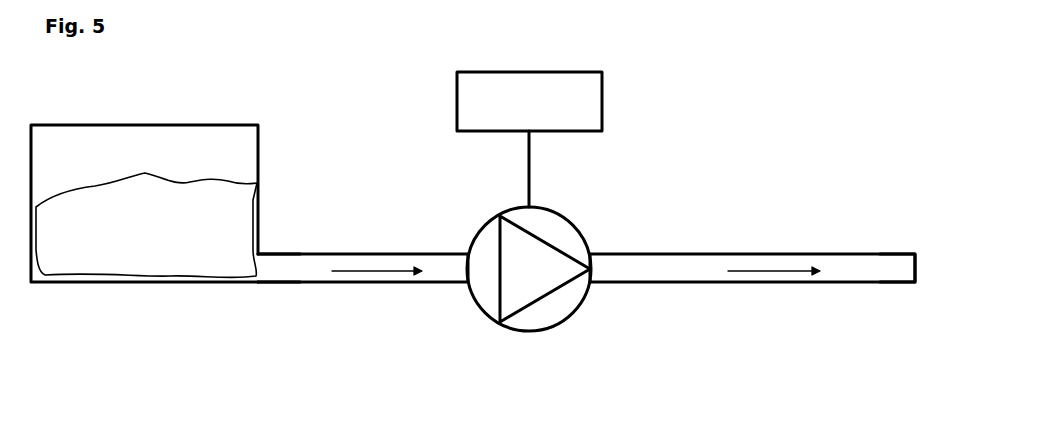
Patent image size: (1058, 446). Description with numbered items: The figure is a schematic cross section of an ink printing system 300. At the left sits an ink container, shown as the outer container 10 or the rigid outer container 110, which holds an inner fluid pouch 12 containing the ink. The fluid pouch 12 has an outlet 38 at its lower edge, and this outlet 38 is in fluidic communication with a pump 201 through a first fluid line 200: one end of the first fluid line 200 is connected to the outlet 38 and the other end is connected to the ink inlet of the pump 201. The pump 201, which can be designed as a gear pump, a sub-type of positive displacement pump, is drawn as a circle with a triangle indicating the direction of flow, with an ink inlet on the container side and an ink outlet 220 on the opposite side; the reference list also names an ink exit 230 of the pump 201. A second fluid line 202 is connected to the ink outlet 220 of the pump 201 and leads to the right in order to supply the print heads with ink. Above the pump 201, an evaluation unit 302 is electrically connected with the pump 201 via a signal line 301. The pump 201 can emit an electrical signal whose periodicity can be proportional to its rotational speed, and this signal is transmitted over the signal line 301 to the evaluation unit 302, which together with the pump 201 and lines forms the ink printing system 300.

The outer container 10 is at (157, 176).
The rigid outer container 110 is at (178, 116).
The fluid pouch 12 is at (241, 200).
The outlet 38 is at (275, 284).
The first fluid line 200 is at (377, 284).
The pump 201 is at (543, 332).
The second fluid line 202 is at (858, 268).
The ink outlet 220 is at (467, 269).
The ink exit 230 is at (593, 268).
The ink printing system 300 is at (660, 113).
The signal line 301 is at (531, 168).
The evaluation unit 302 is at (590, 110).